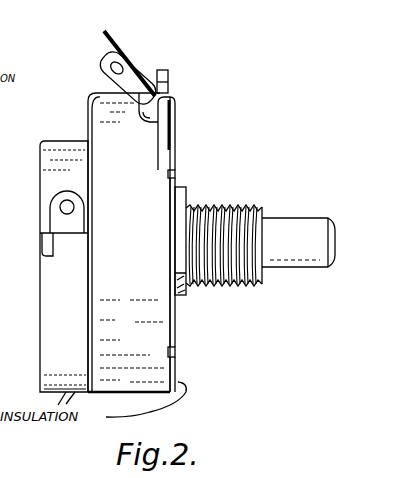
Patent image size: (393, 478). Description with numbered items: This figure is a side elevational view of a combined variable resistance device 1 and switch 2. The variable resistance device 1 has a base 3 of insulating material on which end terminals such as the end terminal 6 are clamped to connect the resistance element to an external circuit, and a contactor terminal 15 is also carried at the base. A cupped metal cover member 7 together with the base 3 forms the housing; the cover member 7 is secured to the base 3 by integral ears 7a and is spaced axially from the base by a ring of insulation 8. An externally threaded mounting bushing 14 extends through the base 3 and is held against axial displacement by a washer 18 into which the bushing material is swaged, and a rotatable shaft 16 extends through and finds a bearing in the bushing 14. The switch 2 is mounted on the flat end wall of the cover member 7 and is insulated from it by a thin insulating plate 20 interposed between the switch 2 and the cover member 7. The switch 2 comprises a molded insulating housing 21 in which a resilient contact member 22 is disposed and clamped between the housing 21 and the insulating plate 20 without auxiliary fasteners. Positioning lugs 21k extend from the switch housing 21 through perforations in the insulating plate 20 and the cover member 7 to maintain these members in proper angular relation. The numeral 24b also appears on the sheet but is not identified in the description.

The variable resistance device 1 is at (182, 134).
The switch 2 is at (44, 352).
The base 3 is at (176, 108).
The end terminal 6 is at (100, 62).
The cover member 7 is at (138, 323).
The integral ears 7a is at (180, 168).
The ring of insulation 8 is at (150, 130).
The mounting bushing 14 is at (250, 208).
The contactor terminal 15 is at (117, 35).
The shaft 16 is at (294, 232).
The washer 18 is at (185, 193).
The insulating plate 20 is at (86, 114).
The switch housing 21 is at (53, 303).
The positioning lugs 21k is at (89, 247).
The contact member 22 is at (63, 218).
The terminal 24b is at (19, 462).